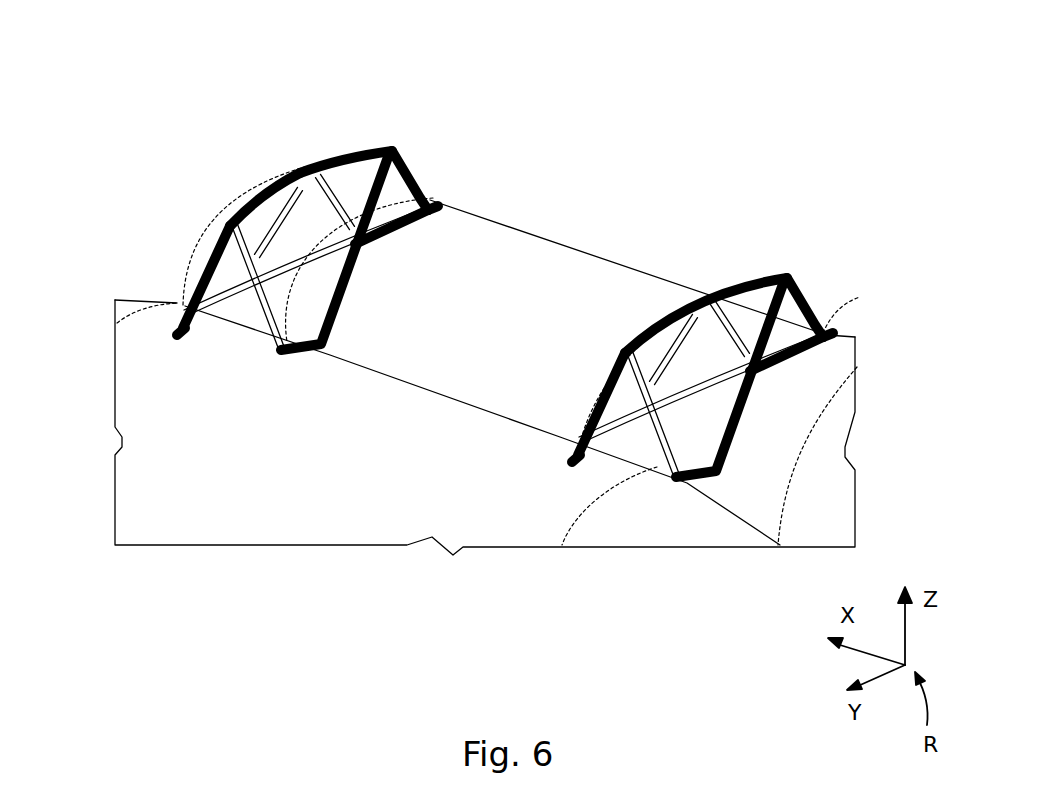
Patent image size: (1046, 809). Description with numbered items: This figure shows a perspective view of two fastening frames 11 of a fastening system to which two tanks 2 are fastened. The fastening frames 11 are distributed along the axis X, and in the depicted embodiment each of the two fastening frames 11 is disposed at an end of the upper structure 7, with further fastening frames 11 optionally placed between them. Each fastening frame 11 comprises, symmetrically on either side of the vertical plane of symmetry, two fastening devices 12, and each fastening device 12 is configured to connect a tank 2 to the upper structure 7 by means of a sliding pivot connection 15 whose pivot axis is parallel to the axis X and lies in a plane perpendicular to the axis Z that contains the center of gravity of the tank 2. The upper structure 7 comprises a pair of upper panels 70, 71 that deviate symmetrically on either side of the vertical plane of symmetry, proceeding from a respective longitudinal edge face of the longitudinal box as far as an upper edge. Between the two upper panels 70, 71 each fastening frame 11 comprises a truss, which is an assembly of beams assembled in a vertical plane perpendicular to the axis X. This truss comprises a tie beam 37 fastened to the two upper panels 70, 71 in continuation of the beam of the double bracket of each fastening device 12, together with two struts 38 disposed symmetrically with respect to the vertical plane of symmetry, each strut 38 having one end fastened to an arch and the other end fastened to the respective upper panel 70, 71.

The tank 2 is at (610, 262).
The upper structure 7 is at (497, 330).
The fastening frame 11 is at (497, 330).
The fastening device 12 is at (210, 266).
The sliding pivot connection 15 is at (183, 323).
The tie beam 37 is at (300, 320).
The strut 38 is at (284, 220).
The upper panel 70 is at (237, 225).
The upper panel 71 is at (393, 152).